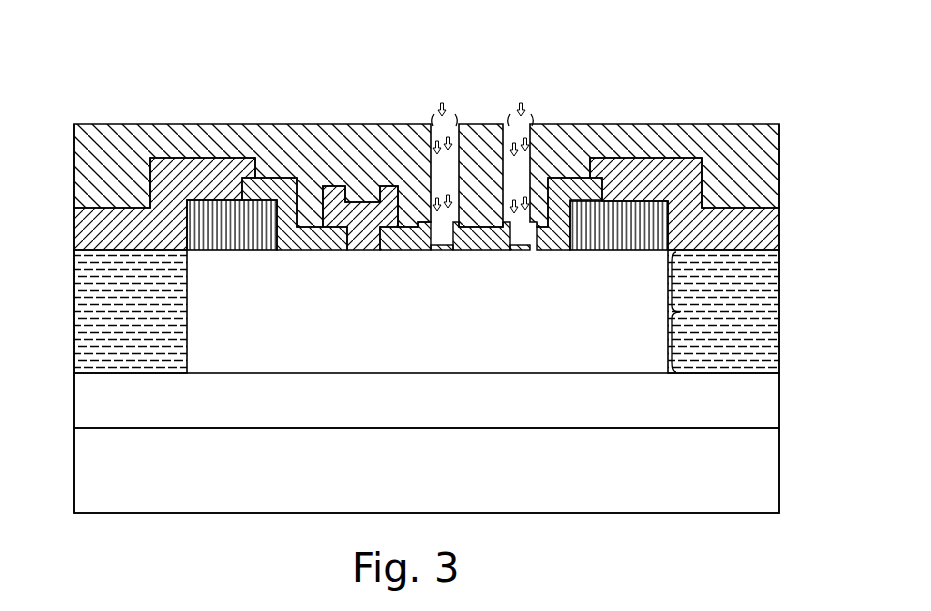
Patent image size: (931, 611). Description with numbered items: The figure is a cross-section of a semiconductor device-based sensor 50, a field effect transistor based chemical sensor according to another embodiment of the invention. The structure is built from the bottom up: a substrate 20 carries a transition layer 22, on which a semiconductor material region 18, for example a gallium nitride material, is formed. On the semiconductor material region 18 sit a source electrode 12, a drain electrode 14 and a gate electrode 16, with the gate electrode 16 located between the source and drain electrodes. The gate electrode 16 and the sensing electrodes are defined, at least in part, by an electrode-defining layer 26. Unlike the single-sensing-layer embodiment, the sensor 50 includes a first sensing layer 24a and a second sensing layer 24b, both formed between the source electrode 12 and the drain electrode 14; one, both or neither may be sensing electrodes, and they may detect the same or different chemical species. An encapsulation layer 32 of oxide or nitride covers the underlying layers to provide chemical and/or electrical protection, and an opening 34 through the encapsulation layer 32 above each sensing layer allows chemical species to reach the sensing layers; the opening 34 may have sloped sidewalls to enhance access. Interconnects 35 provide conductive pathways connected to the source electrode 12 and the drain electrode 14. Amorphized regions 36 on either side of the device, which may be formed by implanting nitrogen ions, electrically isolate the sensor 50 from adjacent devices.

The source electrode 12 is at (223, 242).
The drain electrode 14 is at (648, 241).
The gate electrode 16 is at (360, 218).
The semiconductor material region 18 is at (691, 312).
The substrate 20 is at (241, 479).
The transition layer 22 is at (241, 407).
The first sensing layer 24a is at (442, 251).
The second sensing layer 24b is at (528, 251).
The electrode-defining layer 26 is at (304, 256).
The encapsulation layer 32 is at (313, 158).
The opening 34 is at (427, 134).
The interconnects 35 is at (213, 192).
The amorphized regions 36 is at (140, 326).
The semiconductor device-based sensor 50 is at (753, 103).